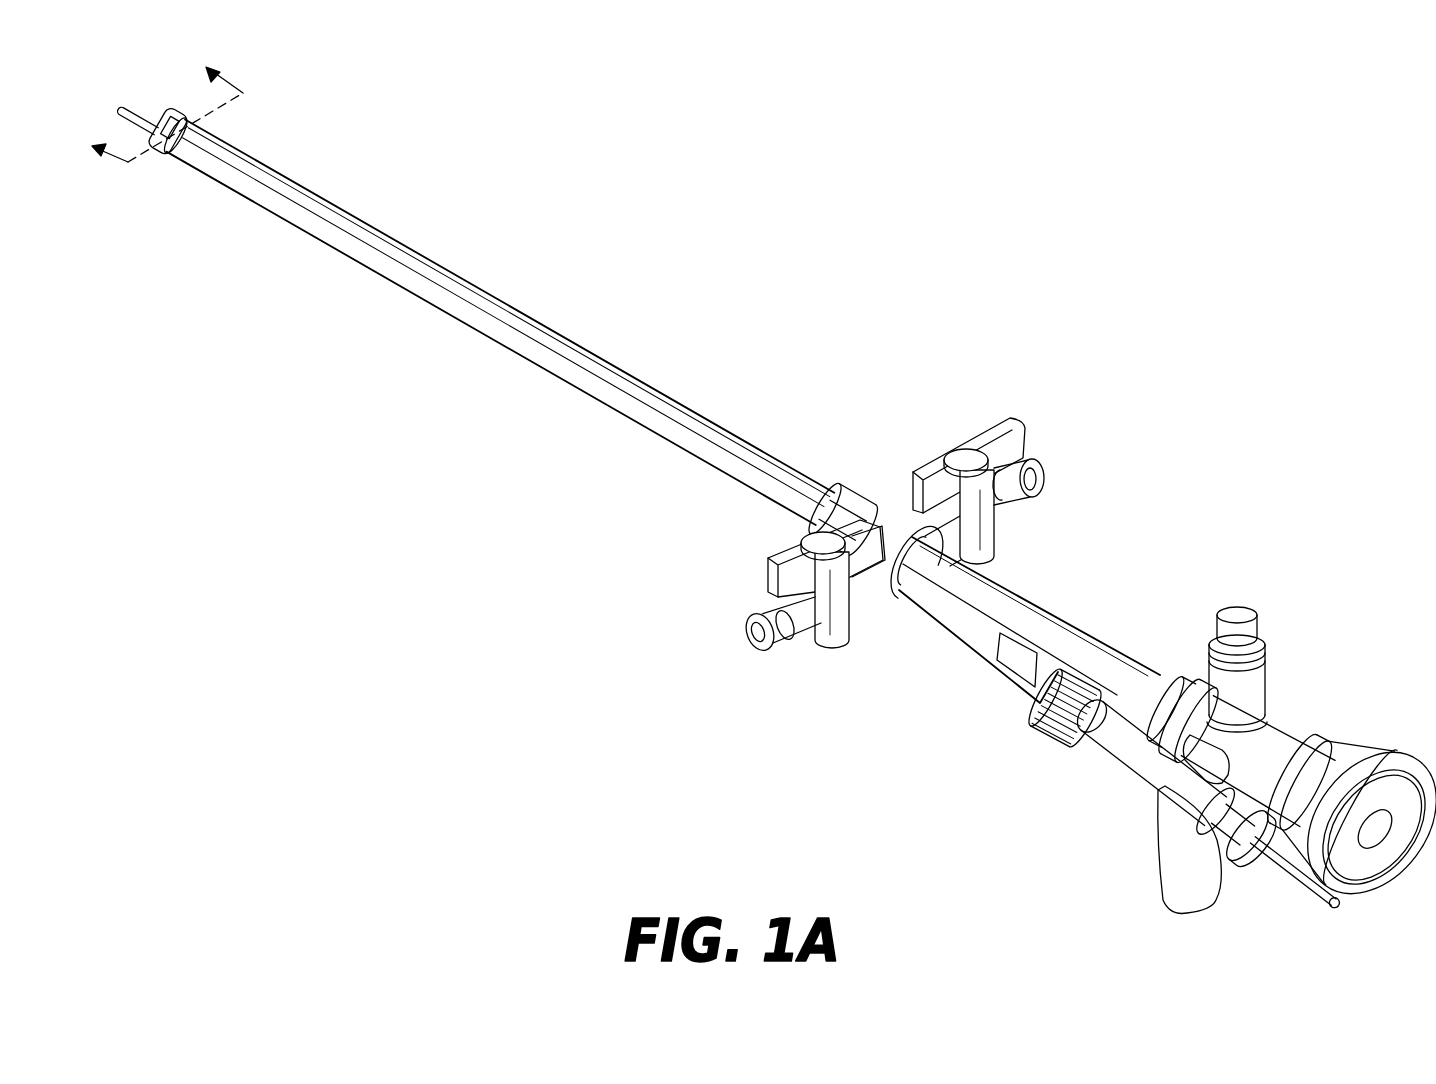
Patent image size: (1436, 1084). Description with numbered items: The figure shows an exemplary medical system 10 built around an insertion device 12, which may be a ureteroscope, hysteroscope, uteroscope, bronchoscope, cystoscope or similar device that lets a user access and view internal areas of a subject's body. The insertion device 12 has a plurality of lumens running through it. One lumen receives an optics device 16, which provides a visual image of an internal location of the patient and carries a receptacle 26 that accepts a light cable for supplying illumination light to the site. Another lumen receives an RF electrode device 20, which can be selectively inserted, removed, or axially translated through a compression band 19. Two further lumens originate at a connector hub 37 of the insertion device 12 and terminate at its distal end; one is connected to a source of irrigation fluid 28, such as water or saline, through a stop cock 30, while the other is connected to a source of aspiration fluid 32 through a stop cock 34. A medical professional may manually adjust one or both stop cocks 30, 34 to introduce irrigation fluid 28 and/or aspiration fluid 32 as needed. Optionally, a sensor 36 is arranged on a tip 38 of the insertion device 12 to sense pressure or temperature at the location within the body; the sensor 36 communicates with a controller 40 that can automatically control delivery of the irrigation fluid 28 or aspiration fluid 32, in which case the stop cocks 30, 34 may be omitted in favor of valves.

The medical system 10 is at (1200, 282).
The insertion device 12 is at (793, 466).
The optics device 16 is at (1327, 753).
The compression band 19 is at (1055, 740).
The RF electrode device 20 is at (1112, 796).
The receptacle 26 is at (1267, 680).
The source of irrigation fluid 28 is at (1045, 470).
The stop cock 30 is at (958, 450).
The source of aspiration fluid 32 is at (745, 641).
The stop cock 34 is at (810, 537).
The sensor 36 is at (155, 118).
The connector hub 37 is at (893, 510).
The tip 38 is at (176, 112).
The controller 40 is at (165, 158).